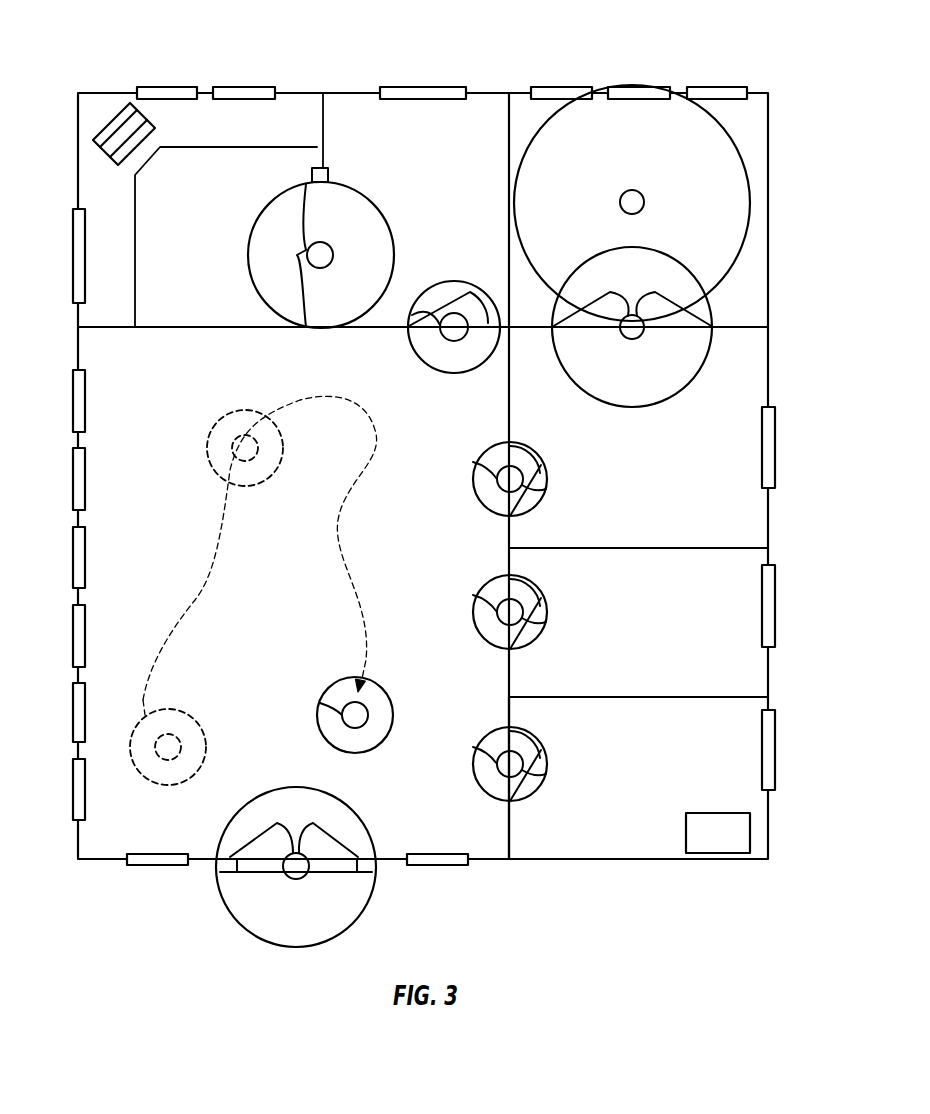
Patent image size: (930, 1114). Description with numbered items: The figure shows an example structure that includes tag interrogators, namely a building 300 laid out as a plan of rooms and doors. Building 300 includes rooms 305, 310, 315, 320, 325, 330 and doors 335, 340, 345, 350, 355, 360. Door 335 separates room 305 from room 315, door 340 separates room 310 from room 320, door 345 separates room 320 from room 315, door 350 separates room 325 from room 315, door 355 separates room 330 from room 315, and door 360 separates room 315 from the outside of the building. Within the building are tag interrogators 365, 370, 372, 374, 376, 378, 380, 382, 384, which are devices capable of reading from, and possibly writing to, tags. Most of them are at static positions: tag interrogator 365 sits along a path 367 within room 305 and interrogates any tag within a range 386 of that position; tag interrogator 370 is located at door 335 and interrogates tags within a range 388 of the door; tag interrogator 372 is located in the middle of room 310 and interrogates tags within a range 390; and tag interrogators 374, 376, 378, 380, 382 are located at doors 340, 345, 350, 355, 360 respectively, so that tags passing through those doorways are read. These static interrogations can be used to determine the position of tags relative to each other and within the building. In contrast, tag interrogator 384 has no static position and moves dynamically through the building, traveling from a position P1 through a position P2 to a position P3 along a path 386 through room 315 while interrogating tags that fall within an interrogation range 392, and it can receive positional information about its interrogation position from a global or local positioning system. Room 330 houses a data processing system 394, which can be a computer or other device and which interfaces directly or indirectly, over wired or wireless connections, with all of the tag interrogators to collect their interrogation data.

The building 300 is at (122, 62).
The room 305 is at (360, 112).
The room 310 is at (712, 178).
The room 315 is at (120, 628).
The room 320 is at (744, 392).
The room 325 is at (744, 572).
The room 330 is at (740, 722).
The door 335 is at (410, 327).
The door 340 is at (590, 297).
The door 345 is at (548, 479).
The door 350 is at (548, 612).
The door 355 is at (548, 764).
The door 360 is at (250, 840).
The tag interrogator 365 is at (333, 255).
The path 367 is at (294, 253).
The tag interrogator 370 is at (454, 341).
The tag interrogator 372 is at (620, 202).
The tag interrogator 374 is at (638, 338).
The tag interrogator 376 is at (478, 470).
The tag interrogator 378 is at (478, 603).
The tag interrogator 380 is at (478, 755).
The tag interrogator 382 is at (297, 880).
The tag interrogator 384 is at (330, 706).
The range / path 386 is at (335, 184).
The range 388 is at (459, 281).
The range 390 is at (752, 200).
The interrogation range 392 is at (250, 410).
The data processing system 394 is at (686, 830).
The position P1 is at (200, 735).
The position P2 is at (230, 445).
The position P3 is at (368, 715).